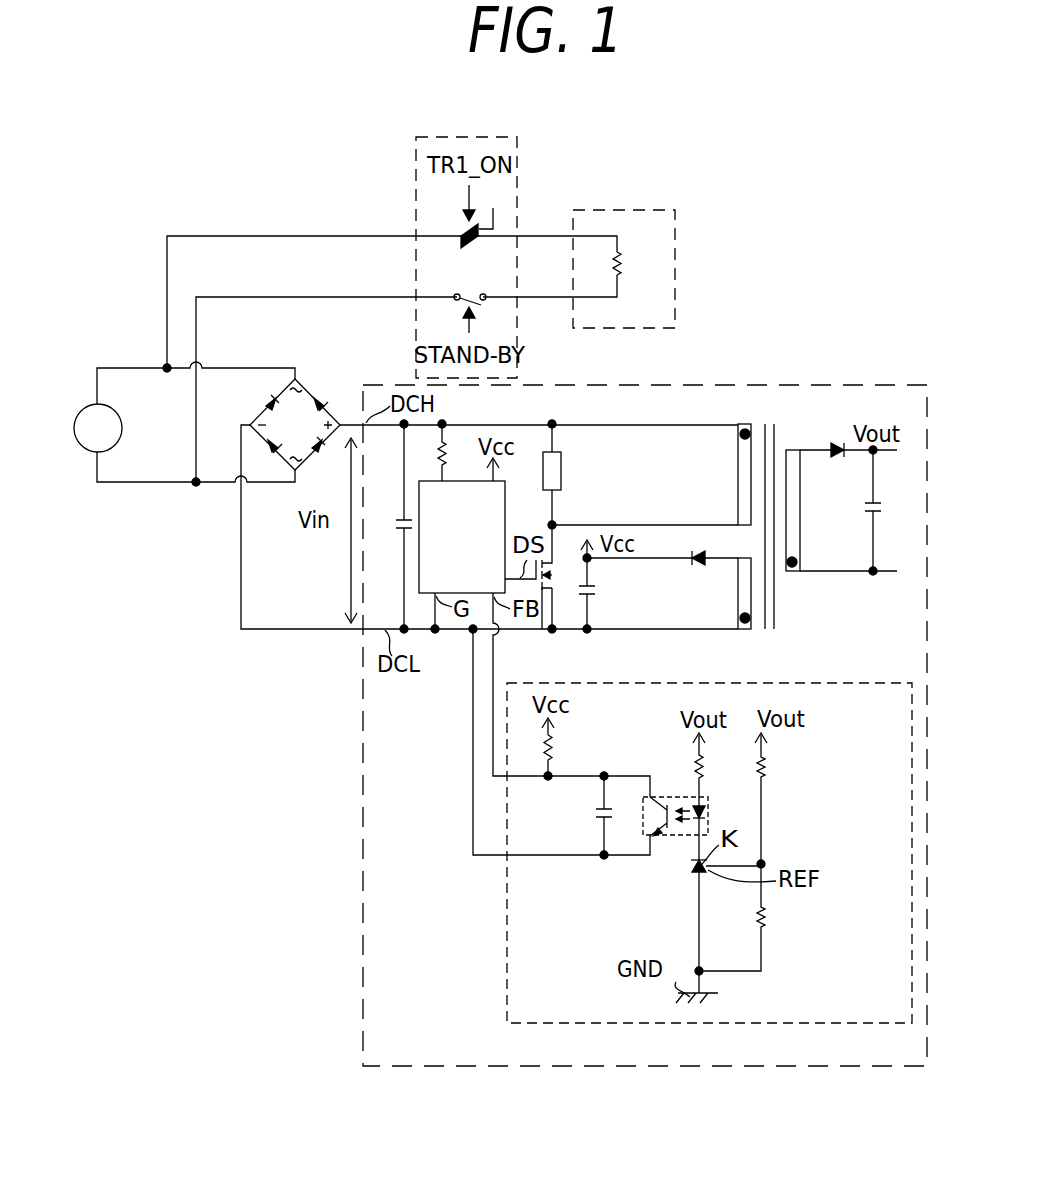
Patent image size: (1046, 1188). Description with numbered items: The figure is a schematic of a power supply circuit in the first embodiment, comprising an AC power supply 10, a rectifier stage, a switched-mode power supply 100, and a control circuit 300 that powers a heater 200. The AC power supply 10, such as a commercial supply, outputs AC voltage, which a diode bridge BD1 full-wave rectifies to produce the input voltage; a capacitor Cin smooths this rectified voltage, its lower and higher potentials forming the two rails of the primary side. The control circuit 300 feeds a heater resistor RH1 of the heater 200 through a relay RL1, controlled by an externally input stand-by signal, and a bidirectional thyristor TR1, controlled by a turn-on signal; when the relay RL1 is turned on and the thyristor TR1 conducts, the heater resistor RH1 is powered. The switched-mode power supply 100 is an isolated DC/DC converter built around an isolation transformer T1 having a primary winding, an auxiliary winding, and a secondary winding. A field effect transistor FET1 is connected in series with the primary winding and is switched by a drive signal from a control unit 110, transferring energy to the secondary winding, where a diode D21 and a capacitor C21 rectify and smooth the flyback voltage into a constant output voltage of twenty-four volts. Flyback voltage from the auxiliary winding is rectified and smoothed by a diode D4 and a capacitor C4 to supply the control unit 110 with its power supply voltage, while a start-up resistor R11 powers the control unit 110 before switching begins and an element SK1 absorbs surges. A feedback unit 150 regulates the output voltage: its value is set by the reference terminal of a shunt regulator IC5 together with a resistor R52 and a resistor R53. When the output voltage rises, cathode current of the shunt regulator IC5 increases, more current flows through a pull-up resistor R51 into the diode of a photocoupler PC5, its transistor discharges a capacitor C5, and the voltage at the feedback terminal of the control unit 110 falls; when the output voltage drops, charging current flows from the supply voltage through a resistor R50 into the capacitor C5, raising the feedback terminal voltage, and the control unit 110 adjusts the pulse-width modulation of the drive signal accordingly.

The AC power supply 10 is at (125, 368).
The switched-mode power supply 100 is at (750, 386).
The control unit 110 is at (505, 505).
The feedback unit 150 is at (738, 683).
The heater 200 is at (675, 238).
The control circuit 300 is at (517, 182).
The bidirectional thyristor (TRIAC) TR1 is at (463, 230).
The relay RL1 is at (456, 293).
The heater resistor RH1 is at (621, 262).
The diode bridge BD1 is at (305, 392).
The capacitor Cin is at (402, 522).
The start-up resistor R11 is at (445, 452).
The surge absorption element SK1 is at (562, 467).
The field effect transistor FET1 is at (548, 583).
The capacitor C4 is at (592, 587).
The diode D4 is at (703, 552).
The isolation transformer T1 is at (776, 418).
The diode D21 is at (838, 455).
The capacitor C21 is at (870, 510).
The resistor R50 is at (543, 755).
The capacitor C5 is at (600, 815).
The photocoupler PC5 is at (672, 830).
The pull-up resistor R51 is at (695, 764).
The resistor R52 is at (770, 766).
The resistor R53 is at (770, 918).
The shunt regulator IC5 is at (699, 876).